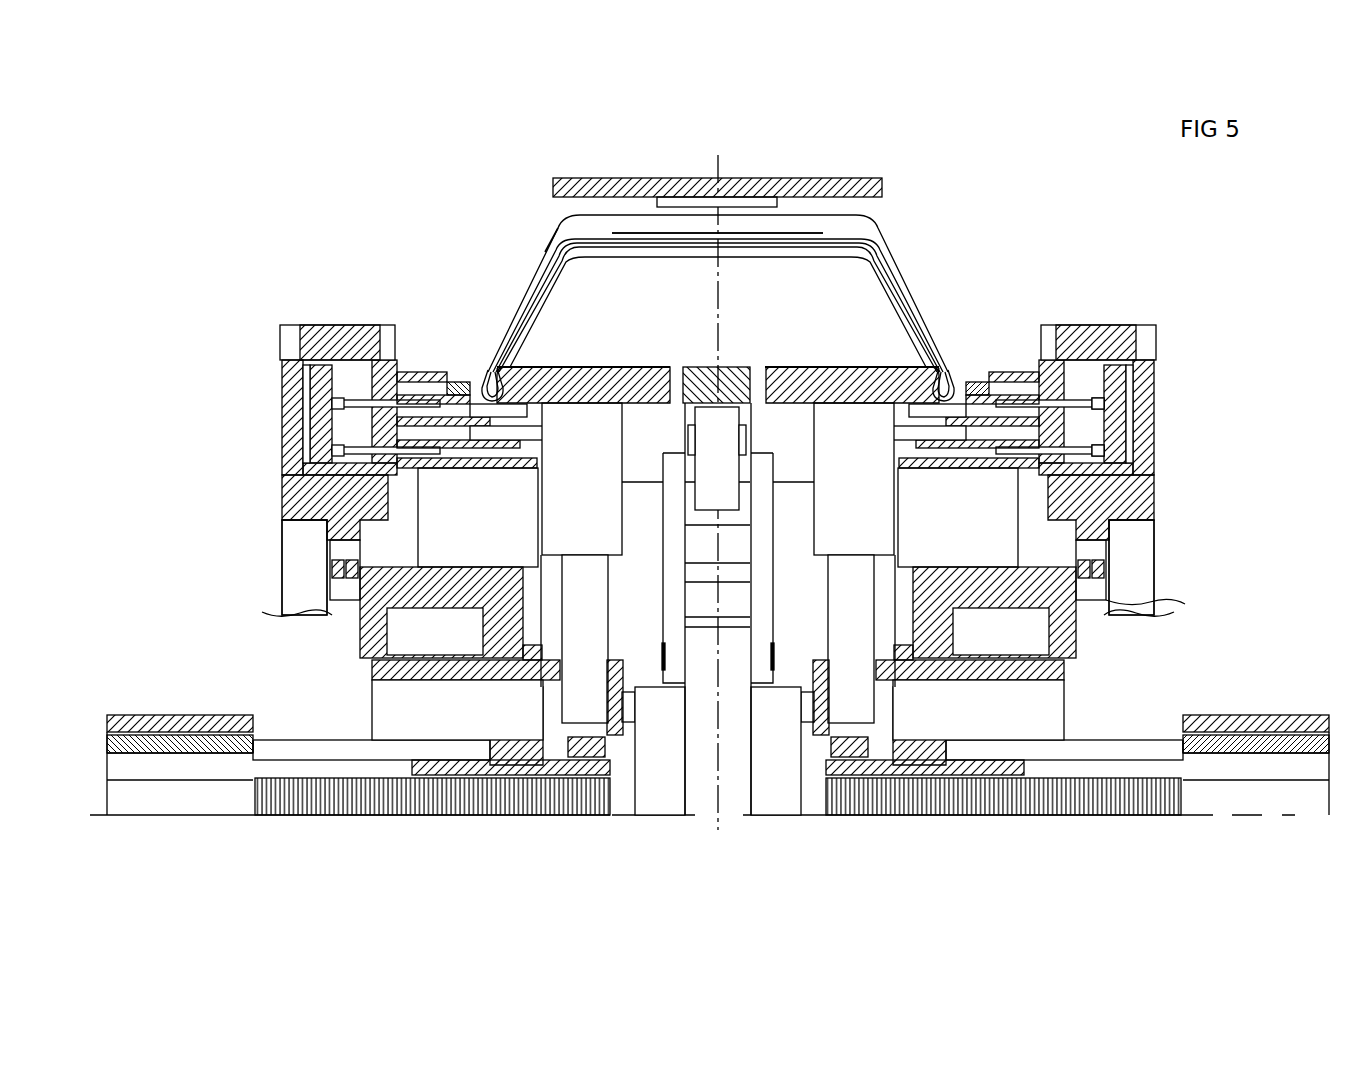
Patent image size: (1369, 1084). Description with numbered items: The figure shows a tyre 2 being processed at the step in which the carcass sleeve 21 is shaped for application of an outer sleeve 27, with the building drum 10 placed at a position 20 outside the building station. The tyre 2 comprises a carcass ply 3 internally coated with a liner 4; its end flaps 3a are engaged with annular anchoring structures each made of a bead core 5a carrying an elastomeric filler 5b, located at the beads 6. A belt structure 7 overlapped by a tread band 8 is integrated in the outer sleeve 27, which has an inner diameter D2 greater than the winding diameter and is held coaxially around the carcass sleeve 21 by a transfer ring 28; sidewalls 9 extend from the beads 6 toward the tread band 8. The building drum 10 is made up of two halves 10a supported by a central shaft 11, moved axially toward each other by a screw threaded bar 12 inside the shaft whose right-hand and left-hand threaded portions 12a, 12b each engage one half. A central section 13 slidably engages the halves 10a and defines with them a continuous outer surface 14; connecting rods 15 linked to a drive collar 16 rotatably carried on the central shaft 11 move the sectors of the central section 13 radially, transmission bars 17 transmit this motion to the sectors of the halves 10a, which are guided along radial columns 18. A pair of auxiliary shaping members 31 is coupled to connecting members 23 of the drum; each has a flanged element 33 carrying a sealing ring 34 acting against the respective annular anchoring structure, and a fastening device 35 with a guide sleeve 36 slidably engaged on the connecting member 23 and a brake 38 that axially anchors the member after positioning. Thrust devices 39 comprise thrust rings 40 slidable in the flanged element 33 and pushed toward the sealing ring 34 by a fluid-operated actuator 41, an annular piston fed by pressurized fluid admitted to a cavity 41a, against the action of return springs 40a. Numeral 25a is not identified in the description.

The tyre 2 is at (890, 222).
The carcass ply 3 is at (895, 265).
The end flaps 3a is at (928, 320).
The liner 4 is at (822, 268).
The bead core 5a is at (492, 390).
The elastomeric filler 5b is at (958, 385).
The beads 6 is at (466, 386).
The belt structure 7 is at (790, 233).
The tread band 8 is at (812, 222).
The sidewalls 9 is at (520, 270).
The building drum 10 is at (655, 822).
The halves 10a is at (635, 386).
The central shaft 11 is at (150, 724).
The screw threaded bar 12 is at (200, 792).
The threaded portion 12a is at (470, 792).
The threaded portion 12b is at (945, 792).
The central section 13 is at (740, 385).
The outer surface 14 is at (590, 366).
The connecting rods 15 is at (676, 540).
The drive collar 16 is at (740, 785).
The transmission bars 17 is at (765, 428).
The columns 18 is at (570, 626).
The position 20 is at (1192, 490).
The carcass sleeve 21 is at (536, 240).
The connecting members 23 is at (405, 672).
The chamber 25a is at (952, 686).
The outer sleeve 27 is at (742, 250).
The transfer ring 28 is at (620, 186).
The auxiliary shaping member 31 is at (330, 322).
The flanged element 33 is at (310, 492).
The sealing ring 34 is at (440, 372).
The fastening device 35 is at (470, 564).
The guide sleeve 36 is at (1062, 645).
The brake 38 is at (416, 644).
The thrust devices 39 is at (296, 388).
The thrust ring 40 is at (420, 380).
The return springs 40a is at (1080, 400).
The fluid-operated actuator 41 is at (322, 420).
The cavity 41a is at (318, 448).
The inner diameter D2 is at (548, 238).